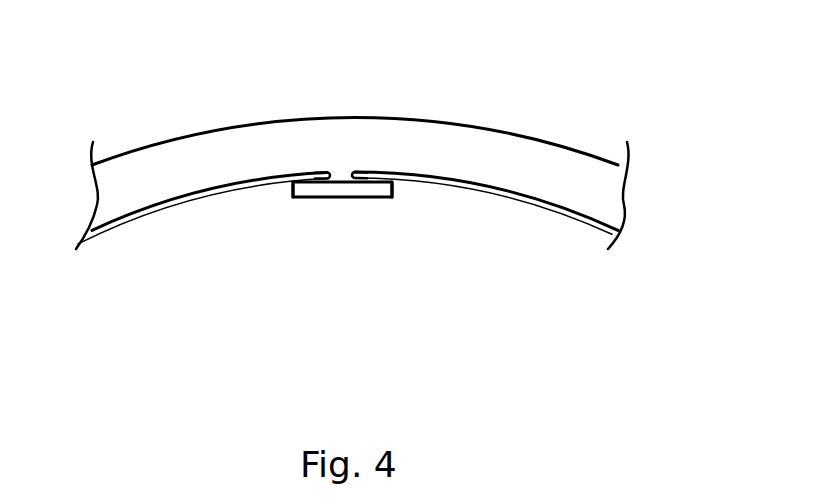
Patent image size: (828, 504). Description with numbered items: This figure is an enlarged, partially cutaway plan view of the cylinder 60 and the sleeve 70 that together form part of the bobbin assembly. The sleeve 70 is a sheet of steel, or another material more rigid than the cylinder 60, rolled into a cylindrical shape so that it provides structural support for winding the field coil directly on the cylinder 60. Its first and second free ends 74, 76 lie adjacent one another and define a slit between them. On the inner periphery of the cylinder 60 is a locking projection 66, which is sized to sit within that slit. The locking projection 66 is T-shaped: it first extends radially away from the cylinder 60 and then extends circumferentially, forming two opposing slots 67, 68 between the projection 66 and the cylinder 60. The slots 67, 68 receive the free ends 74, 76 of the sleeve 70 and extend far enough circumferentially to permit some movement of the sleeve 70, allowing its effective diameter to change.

The cylinder 60 is at (265, 150).
The sleeve 70 is at (142, 215).
The second free end 76 is at (318, 170).
The first free end 74 is at (363, 170).
The locking projection 66 is at (300, 204).
The slot 67 is at (288, 183).
The slot 68 is at (395, 185).